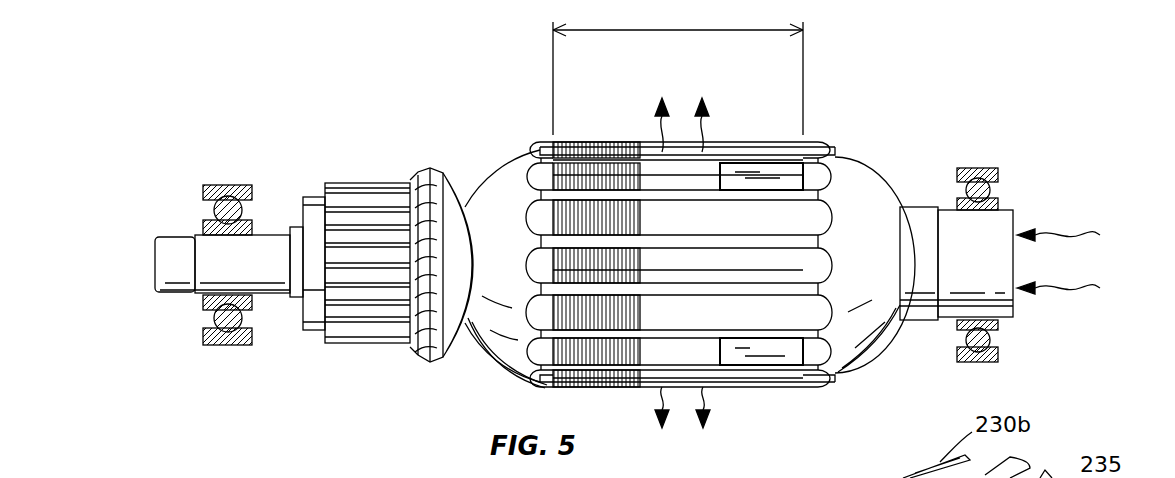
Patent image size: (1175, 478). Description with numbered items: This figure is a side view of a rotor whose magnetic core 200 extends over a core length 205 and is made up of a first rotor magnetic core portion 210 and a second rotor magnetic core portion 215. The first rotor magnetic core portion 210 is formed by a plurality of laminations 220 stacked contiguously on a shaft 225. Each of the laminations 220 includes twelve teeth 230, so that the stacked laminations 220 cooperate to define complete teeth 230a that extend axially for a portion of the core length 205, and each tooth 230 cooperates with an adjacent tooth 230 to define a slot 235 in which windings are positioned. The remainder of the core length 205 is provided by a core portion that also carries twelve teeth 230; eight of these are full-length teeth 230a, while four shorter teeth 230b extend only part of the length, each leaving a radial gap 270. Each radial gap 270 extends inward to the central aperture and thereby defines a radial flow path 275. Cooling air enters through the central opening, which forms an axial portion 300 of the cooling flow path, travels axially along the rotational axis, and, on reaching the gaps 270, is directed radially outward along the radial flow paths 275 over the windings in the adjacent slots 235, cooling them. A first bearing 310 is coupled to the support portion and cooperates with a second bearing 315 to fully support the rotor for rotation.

The magnetic core 200 is at (830, 73).
The core length 205 is at (630, 26).
The first rotor magnetic core portion 210 is at (609, 399).
The second rotor magnetic core portion 215 is at (801, 399).
The laminations 220 is at (540, 320).
The shaft 225 is at (245, 250).
The teeth 230 is at (770, 217).
The complete teeth 230a is at (775, 272).
The partial-length teeth 230b is at (760, 352).
The slot 235 is at (540, 200).
The radial gap 270 is at (725, 150).
The radial flow path 275 is at (700, 402).
The axial portion 300 is at (1067, 232).
The first bearing 310 is at (983, 177).
The second bearing 315 is at (213, 338).